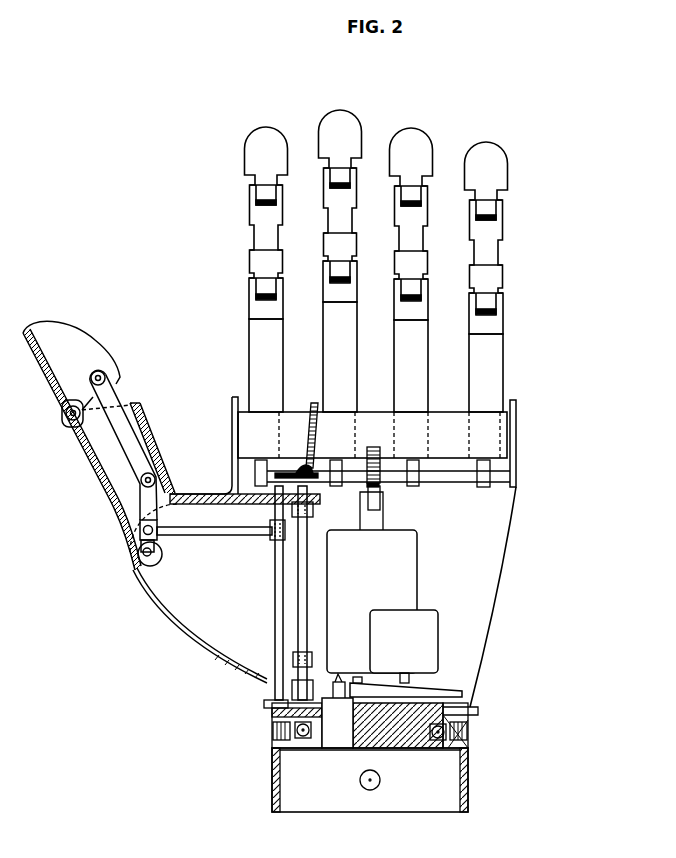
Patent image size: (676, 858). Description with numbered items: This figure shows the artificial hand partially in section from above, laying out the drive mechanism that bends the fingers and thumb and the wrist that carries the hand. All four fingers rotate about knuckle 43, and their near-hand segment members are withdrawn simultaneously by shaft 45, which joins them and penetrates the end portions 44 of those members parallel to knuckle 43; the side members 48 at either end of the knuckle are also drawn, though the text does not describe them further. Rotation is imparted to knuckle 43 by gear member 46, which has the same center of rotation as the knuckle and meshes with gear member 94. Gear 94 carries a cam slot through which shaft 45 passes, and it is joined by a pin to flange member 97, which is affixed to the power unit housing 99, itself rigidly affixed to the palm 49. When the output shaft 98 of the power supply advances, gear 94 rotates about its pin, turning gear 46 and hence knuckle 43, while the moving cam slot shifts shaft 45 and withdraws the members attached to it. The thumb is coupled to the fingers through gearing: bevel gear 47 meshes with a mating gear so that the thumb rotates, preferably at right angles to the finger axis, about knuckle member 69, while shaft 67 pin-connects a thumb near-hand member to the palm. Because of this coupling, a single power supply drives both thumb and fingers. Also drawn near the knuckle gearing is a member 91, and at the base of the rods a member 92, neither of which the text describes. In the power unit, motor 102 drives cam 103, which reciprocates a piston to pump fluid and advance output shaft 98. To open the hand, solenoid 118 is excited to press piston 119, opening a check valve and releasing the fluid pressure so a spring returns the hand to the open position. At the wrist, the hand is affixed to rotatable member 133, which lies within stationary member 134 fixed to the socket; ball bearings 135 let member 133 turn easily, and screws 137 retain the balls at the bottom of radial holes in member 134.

The knuckle 43 is at (435, 418).
The end portions 44 is at (485, 487).
The shaft 45 is at (447, 480).
The gear member 46 is at (380, 452).
The bevel gear 47 is at (313, 403).
The side bracket 48 is at (232, 437).
The palm 49 is at (478, 579).
The shaft 67 is at (277, 620).
The knuckle member 69 is at (307, 560).
The stop bar 91 is at (318, 496).
The bearing support 92 is at (268, 708).
The gear member 94 is at (379, 487).
The flange member 97 is at (383, 517).
The output shaft 98 is at (371, 522).
The power unit housing 99 is at (405, 568).
The motor 102 is at (428, 625).
The cam 103 is at (440, 690).
The solenoid 118 is at (340, 728).
The piston 119 is at (340, 680).
The rotatable member 133 is at (478, 710).
The stationary member 134 is at (468, 796).
The ball bearings 135 is at (438, 745).
The screws 137 is at (468, 732).